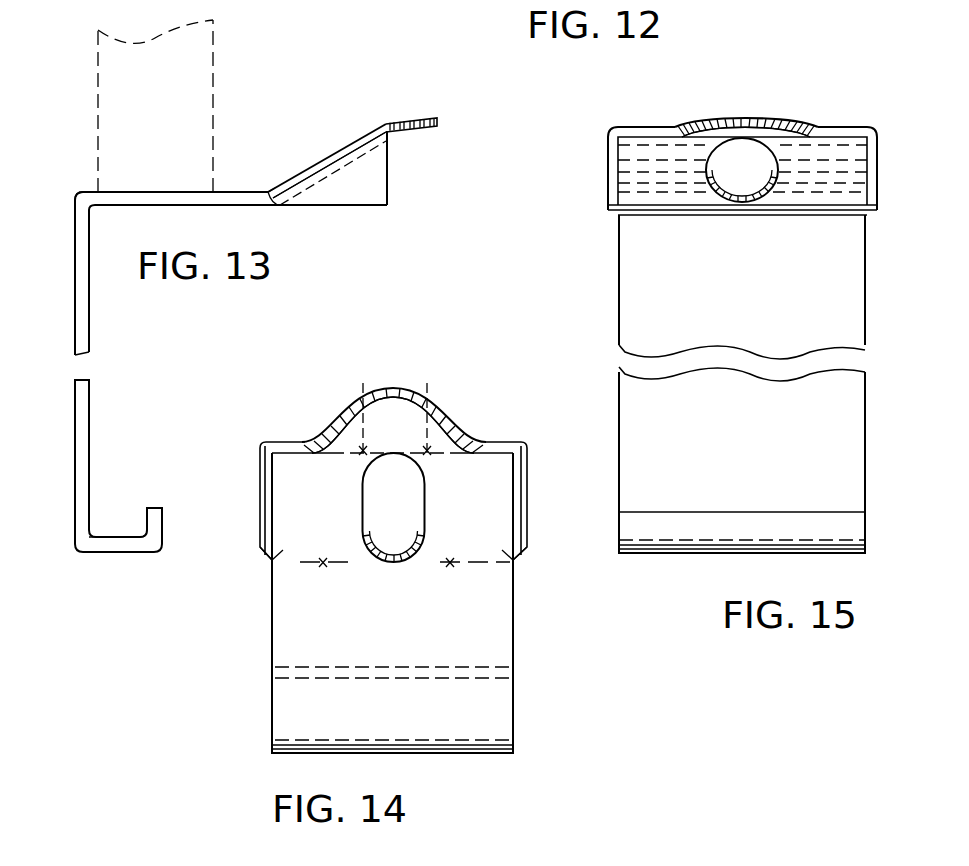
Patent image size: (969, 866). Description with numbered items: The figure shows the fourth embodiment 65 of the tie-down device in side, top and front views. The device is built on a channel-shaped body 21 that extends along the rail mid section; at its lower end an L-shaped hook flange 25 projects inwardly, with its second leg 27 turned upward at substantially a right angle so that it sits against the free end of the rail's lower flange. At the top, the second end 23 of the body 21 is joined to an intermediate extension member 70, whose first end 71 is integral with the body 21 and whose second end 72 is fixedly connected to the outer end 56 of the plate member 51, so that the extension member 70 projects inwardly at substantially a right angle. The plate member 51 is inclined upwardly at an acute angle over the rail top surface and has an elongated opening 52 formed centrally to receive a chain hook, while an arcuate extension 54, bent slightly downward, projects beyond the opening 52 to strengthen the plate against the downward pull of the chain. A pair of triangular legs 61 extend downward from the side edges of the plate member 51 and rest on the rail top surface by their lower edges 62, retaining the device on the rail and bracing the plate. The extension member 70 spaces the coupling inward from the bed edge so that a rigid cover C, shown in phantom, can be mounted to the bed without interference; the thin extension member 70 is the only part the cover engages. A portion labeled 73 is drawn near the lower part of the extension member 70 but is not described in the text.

In FIG. 13, the body 21 is at (72, 322).
In FIG. 15, the body 21 is at (622, 282).
In FIG. 13, the second end 23 is at (72, 205).
In FIG. 13, the hook flange 25 is at (110, 553).
In FIG. 15, the second leg 27 is at (672, 532).
In FIG. 13, the plate member 51 is at (322, 158).
In FIG. 14, the plate member 51 is at (465, 480).
In FIG. 15, the plate member 51 is at (662, 160).
In FIG. 14, the elongated opening 52 is at (390, 483).
In FIG. 15, the elongated opening 52 is at (733, 205).
In FIG. 13, the arcuate extension 54 is at (415, 122).
In FIG. 14, the arcuate extension 54 is at (393, 394).
In FIG. 15, the arcuate extension 54 is at (733, 120).
In FIG. 13, the outer end 56 is at (268, 190).
In FIG. 14, the outer end 56 is at (272, 560).
In FIG. 13, the triangular legs 61 is at (365, 180).
In FIG. 15, the triangular legs 61 is at (608, 150).
In FIG. 13, the lower edges 62 is at (335, 207).
In FIG. 13, the fourth embodiment 65 is at (189, 124).
In FIG. 14, the fourth embodiment 65 is at (436, 375).
In FIG. 15, the fourth embodiment 65 is at (801, 95).
In FIG. 13, the extension member 70 is at (163, 192).
In FIG. 14, the extension member 70 is at (282, 620).
In FIG. 13, the first end 71 is at (97, 192).
In FIG. 13, the second end 72 is at (262, 192).
In FIG. 14, the second end 72 is at (500, 567).
In FIG. 14, the bottom portion 73 is at (495, 730).
In FIG. 13, the cover C is at (125, 80).